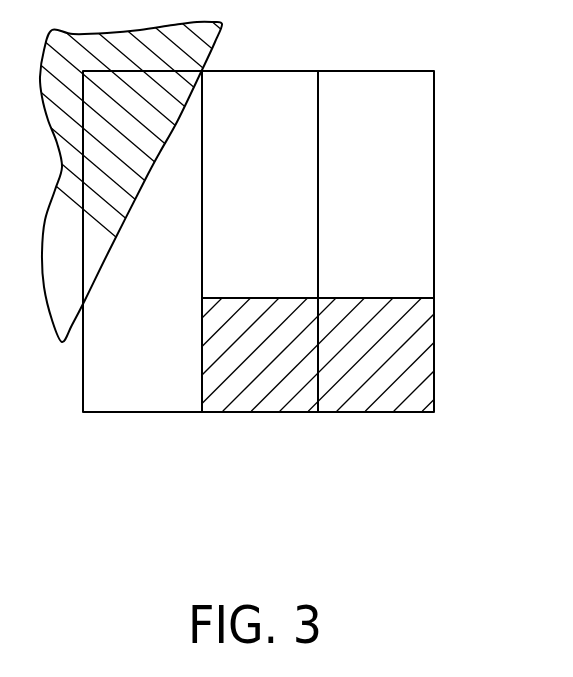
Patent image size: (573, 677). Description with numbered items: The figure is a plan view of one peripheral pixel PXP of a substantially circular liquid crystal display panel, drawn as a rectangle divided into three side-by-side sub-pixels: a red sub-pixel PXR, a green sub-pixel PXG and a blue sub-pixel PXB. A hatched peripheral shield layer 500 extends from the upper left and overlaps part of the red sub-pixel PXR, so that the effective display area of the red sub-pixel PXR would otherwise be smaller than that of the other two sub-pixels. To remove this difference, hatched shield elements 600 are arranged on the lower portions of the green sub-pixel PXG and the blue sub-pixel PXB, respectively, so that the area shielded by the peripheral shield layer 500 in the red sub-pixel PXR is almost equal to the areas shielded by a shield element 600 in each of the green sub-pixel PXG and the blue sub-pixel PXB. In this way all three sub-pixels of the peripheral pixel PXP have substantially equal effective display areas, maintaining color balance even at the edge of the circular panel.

The peripheral shield layer 500 is at (221, 26).
The shield element 600 is at (278, 302).
The red sub-pixel PXR is at (133, 412).
The green sub-pixel PXG is at (258, 412).
The blue sub-pixel PXB is at (378, 412).
The peripheral pixel PXP is at (435, 490).